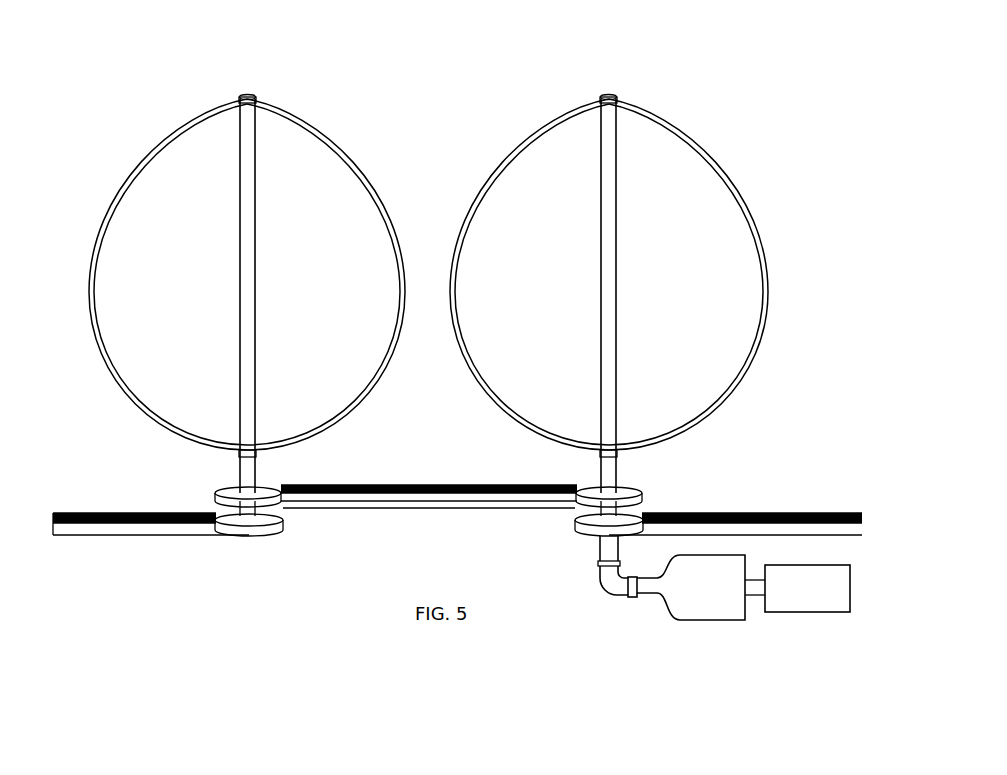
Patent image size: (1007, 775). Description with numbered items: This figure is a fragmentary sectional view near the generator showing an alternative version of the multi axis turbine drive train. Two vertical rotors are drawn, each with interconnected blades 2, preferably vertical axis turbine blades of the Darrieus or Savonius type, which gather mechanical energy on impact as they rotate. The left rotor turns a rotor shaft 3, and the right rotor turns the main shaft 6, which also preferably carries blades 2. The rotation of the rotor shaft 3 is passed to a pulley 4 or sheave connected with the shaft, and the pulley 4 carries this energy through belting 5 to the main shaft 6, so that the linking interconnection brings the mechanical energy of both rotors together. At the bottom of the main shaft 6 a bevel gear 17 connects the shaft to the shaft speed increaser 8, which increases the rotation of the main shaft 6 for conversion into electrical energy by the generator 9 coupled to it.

The blades 2 is at (748, 186).
The rotor shaft 3 is at (246, 98).
The pulley 4 is at (457, 493).
The belting 5 is at (415, 503).
The main shaft 6 is at (617, 256).
The shaft speed increaser 8 is at (678, 608).
The generator 9 is at (803, 603).
The bevel gear 17 is at (610, 580).